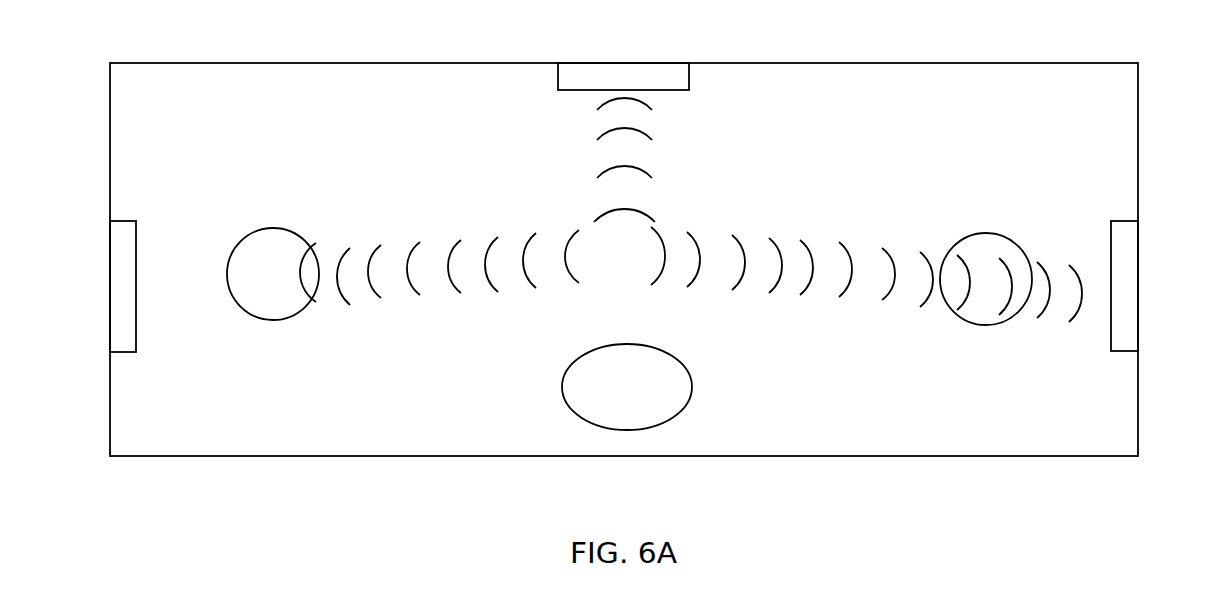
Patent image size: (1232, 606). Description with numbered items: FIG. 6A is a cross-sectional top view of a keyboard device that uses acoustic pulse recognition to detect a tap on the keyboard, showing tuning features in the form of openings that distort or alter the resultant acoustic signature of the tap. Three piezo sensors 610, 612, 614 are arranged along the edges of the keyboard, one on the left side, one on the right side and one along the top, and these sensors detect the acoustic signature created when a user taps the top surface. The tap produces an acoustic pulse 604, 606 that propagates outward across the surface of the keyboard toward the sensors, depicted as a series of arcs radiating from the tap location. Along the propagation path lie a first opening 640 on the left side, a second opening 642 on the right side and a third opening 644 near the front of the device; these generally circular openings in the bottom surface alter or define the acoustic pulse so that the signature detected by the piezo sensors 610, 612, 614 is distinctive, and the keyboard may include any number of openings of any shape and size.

The acoustic pulse 604 is at (885, 294).
The acoustic pulse 606 is at (377, 292).
The piezo sensor 610 is at (122, 257).
The piezo sensor 612 is at (1123, 243).
The piezo sensor 614 is at (590, 79).
The first opening 640 is at (288, 255).
The second opening 642 is at (980, 255).
The third opening 644 is at (634, 362).